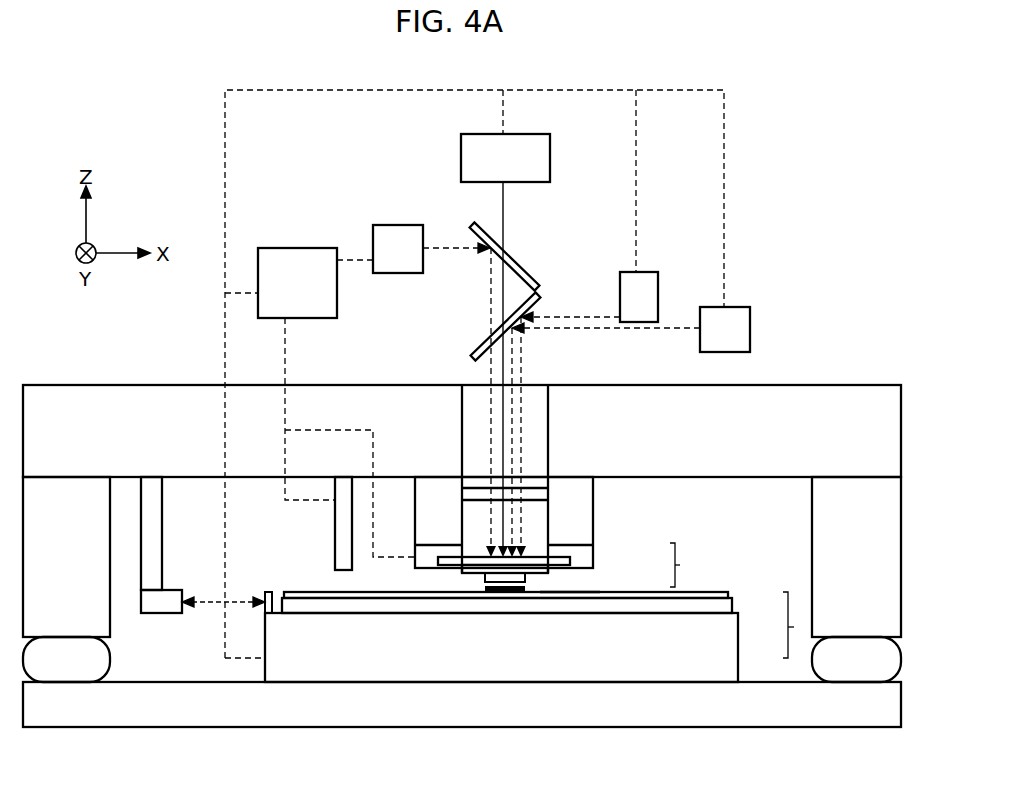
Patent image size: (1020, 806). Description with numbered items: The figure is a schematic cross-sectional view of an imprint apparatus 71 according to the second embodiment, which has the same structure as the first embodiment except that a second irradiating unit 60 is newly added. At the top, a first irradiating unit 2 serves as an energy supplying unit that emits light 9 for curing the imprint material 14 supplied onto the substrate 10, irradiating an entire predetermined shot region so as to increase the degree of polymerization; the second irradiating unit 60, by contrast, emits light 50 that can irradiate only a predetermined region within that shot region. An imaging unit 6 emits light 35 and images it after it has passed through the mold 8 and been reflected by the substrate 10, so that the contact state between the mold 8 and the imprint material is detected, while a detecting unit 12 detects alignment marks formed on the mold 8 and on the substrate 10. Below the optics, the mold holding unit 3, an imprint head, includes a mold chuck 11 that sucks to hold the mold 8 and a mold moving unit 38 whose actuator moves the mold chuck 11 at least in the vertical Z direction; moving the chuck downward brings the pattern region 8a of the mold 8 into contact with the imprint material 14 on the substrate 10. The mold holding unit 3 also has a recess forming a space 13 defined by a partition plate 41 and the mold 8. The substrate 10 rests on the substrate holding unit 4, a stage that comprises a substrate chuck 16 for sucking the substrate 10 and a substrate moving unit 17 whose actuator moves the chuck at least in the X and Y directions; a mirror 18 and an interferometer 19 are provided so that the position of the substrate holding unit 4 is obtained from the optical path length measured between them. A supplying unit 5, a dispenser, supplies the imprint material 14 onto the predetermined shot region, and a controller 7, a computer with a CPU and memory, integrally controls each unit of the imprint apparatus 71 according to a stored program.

The imprint apparatus 71 is at (762, 38).
The imaging unit 6 is at (550, 157).
The light 35 is at (503, 200).
The detecting unit 12 is at (388, 225).
The controller 7 is at (300, 248).
The light 50 is at (565, 317).
The second irradiating unit 60 is at (650, 272).
The light 9 is at (555, 335).
The first irradiating unit 2 is at (750, 330).
The partition plate 41 is at (548, 493).
The space 13 is at (540, 527).
The mold moving unit 38 is at (593, 560).
The mold chuck 11 is at (560, 568).
The mold holding unit 3 is at (683, 565).
The substrate chuck 16 is at (732, 605).
The substrate moving unit 17 is at (738, 650).
The substrate holding unit 4 is at (796, 625).
The supplying unit 5 is at (335, 542).
The mirror 18 is at (268, 590).
The interferometer 19 is at (163, 613).
The mold 8 is at (475, 577).
The pattern region 8a is at (487, 582).
The imprint material 14 is at (503, 593).
The substrate 10 is at (565, 595).